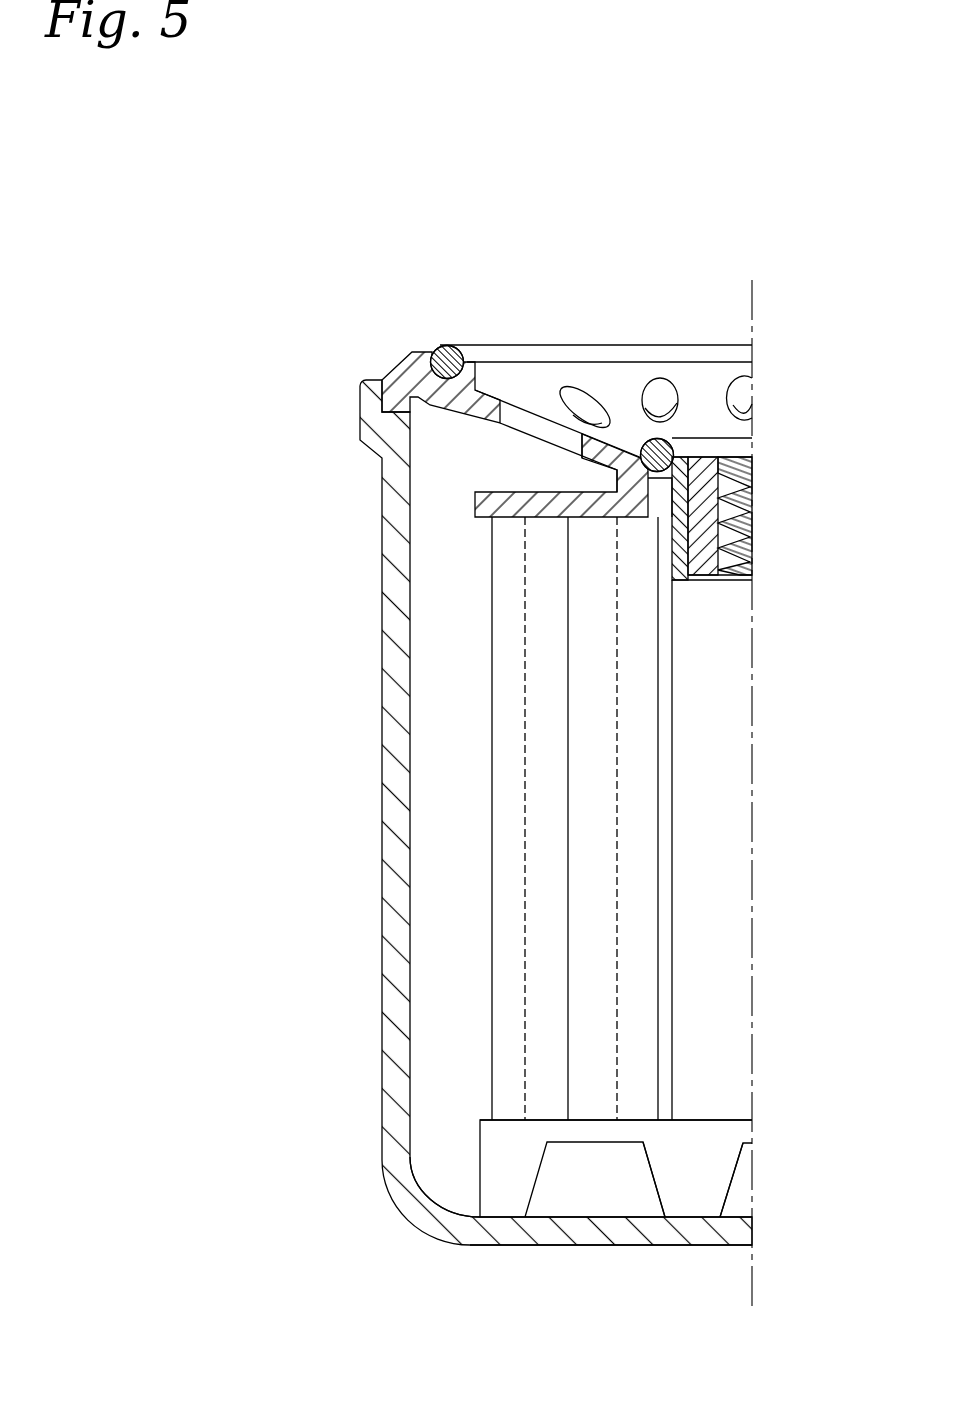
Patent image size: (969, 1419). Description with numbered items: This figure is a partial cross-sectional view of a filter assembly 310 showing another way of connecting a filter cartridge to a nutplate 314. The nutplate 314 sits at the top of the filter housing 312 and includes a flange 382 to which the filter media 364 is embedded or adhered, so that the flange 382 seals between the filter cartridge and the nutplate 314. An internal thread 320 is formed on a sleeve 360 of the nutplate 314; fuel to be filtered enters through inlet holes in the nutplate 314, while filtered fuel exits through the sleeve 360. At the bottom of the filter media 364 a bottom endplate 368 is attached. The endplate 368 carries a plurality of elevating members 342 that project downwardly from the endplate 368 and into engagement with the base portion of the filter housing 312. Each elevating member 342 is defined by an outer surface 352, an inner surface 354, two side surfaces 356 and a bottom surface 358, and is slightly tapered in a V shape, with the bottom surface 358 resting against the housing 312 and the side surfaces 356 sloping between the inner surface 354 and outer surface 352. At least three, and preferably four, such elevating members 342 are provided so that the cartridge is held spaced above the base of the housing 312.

The filter assembly 310 is at (489, 805).
The filter housing 312 is at (380, 813).
The nutplate 314 is at (402, 358).
The internal thread 320 is at (733, 577).
The elevating member 342 is at (575, 1200).
The outer surface 352 is at (480, 1192).
The inner surface 354 is at (540, 1190).
The side surface 356 is at (660, 1190).
The bottom surface 358 is at (497, 1220).
The sleeve 360 is at (750, 527).
The filter media 364 is at (542, 610).
The bottom endplate 368 is at (480, 1128).
The flange 382 is at (473, 505).